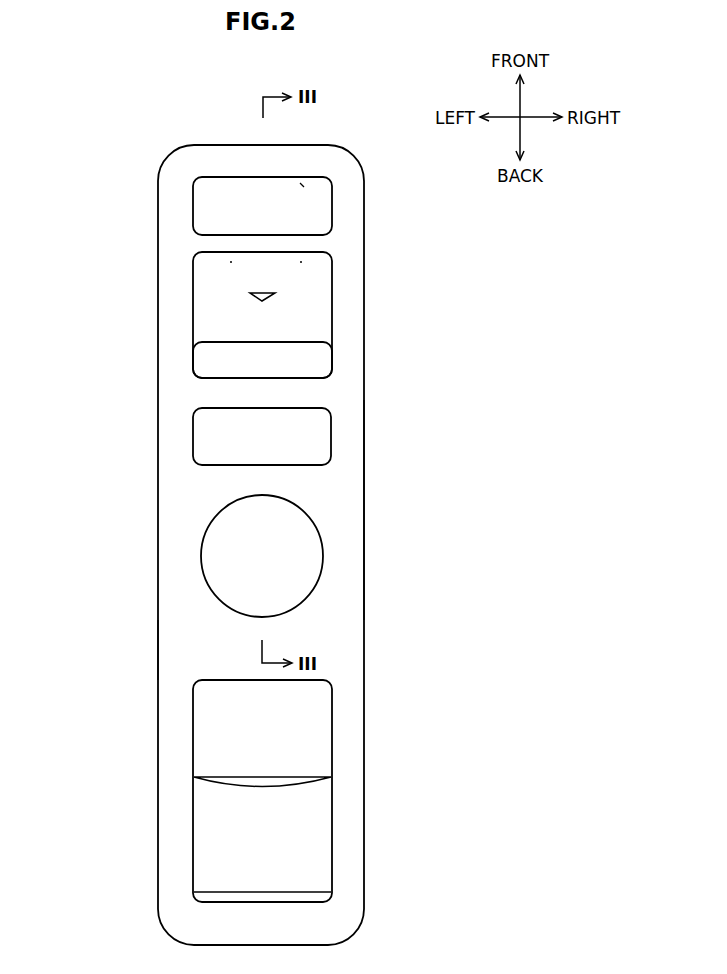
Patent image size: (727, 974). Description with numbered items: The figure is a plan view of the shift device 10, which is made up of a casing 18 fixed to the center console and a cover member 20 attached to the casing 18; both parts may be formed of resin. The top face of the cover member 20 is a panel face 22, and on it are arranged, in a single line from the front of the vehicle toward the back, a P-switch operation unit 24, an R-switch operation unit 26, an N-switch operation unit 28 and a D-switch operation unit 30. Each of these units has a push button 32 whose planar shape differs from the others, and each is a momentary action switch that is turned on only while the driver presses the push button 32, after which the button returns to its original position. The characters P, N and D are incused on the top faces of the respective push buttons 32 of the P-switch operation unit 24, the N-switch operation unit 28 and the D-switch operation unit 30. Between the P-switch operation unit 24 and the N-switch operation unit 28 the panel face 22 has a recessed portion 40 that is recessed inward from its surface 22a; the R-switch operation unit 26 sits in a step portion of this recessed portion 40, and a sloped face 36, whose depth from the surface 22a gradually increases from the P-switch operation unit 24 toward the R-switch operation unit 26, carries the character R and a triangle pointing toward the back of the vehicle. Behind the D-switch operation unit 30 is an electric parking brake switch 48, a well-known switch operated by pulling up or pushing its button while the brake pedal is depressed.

The shift device 10 is at (446, 250).
The casing 18 is at (367, 511).
The cover member 20 is at (300, 923).
The panel face 22 is at (187, 629).
The surface 22a is at (310, 393).
The P-switch operation unit 24 is at (191, 205).
The R-switch operation unit 26 is at (213, 328).
The N-switch operation unit 28 is at (188, 436).
The D-switch operation unit 30 is at (195, 537).
The push button 32 is at (304, 185).
The sloped face 36 is at (302, 280).
The recessed portion 40 is at (220, 287).
The electric parking brake switch 48 is at (300, 843).